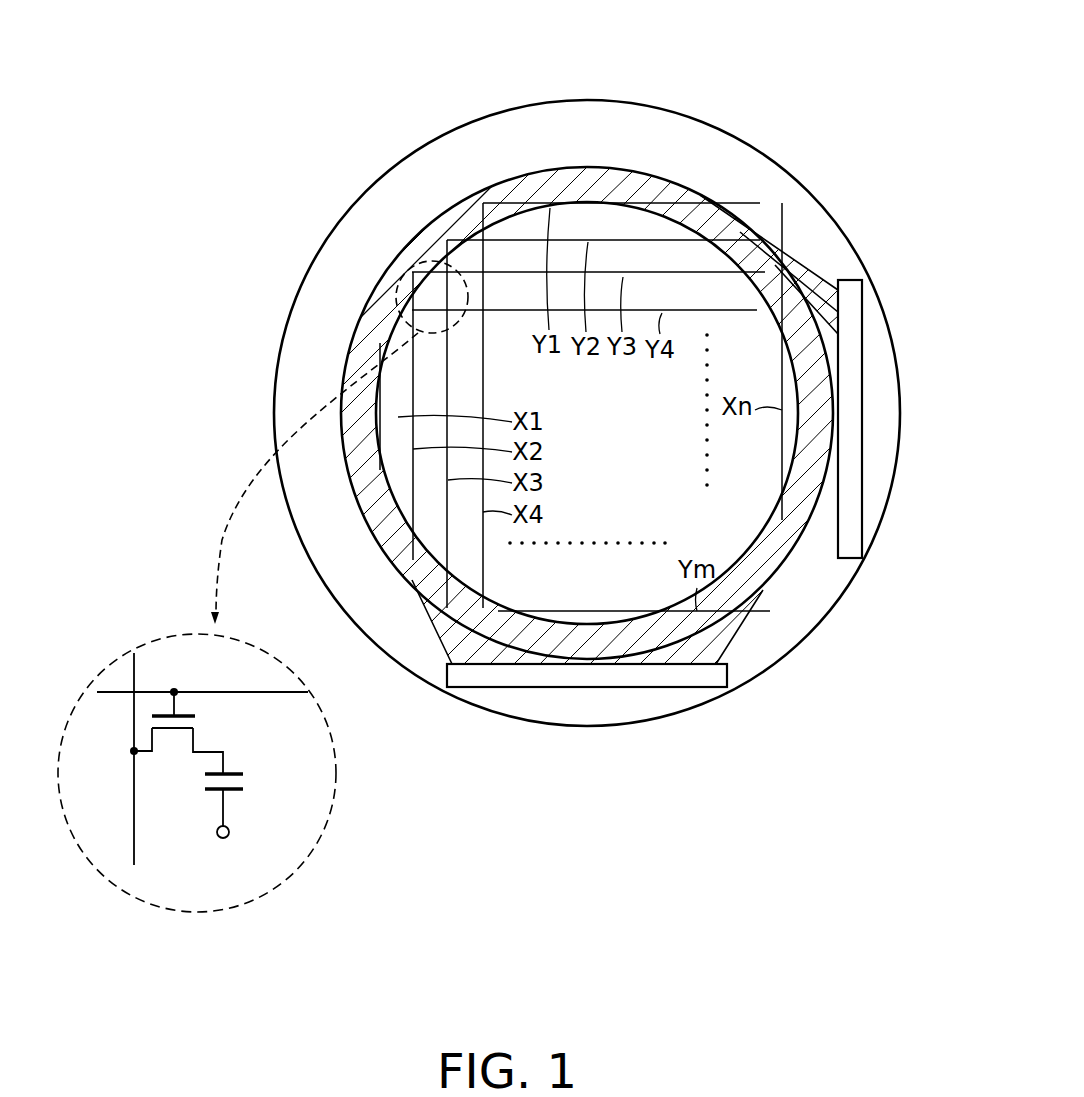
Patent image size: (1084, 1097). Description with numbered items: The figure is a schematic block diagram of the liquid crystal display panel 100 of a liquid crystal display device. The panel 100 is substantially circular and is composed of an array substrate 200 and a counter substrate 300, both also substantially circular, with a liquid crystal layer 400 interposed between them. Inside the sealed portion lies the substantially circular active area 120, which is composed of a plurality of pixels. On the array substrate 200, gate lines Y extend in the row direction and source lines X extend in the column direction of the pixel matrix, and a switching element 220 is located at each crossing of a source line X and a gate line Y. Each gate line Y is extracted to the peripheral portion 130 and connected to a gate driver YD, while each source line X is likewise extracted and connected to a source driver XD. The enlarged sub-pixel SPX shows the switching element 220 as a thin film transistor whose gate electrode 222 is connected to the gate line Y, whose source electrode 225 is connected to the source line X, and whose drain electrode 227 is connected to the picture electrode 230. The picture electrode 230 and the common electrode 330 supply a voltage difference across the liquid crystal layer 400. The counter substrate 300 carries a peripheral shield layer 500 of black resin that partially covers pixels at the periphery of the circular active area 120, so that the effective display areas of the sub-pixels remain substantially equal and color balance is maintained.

The liquid crystal display panel 100 is at (692, 91).
The active area 120 is at (512, 205).
The peripheral portion 130 is at (812, 252).
The array substrate 200 is at (757, 148).
The counter substrate 300 is at (576, 166).
The peripheral shield layer 500 is at (428, 245).
The switching element 220 is at (180, 755).
The gate electrode 222 is at (170, 708).
The source electrode 225 is at (146, 755).
The drain electrode 227 is at (200, 754).
The picture electrode 230 is at (243, 771).
The liquid crystal layer 400 is at (243, 782).
The common electrode 330 is at (234, 792).
The gate driver YD is at (862, 418).
The source driver XD is at (663, 688).
The sub-pixel SPX is at (157, 915).
The source line X is at (134, 818).
The gate line Y is at (221, 692).